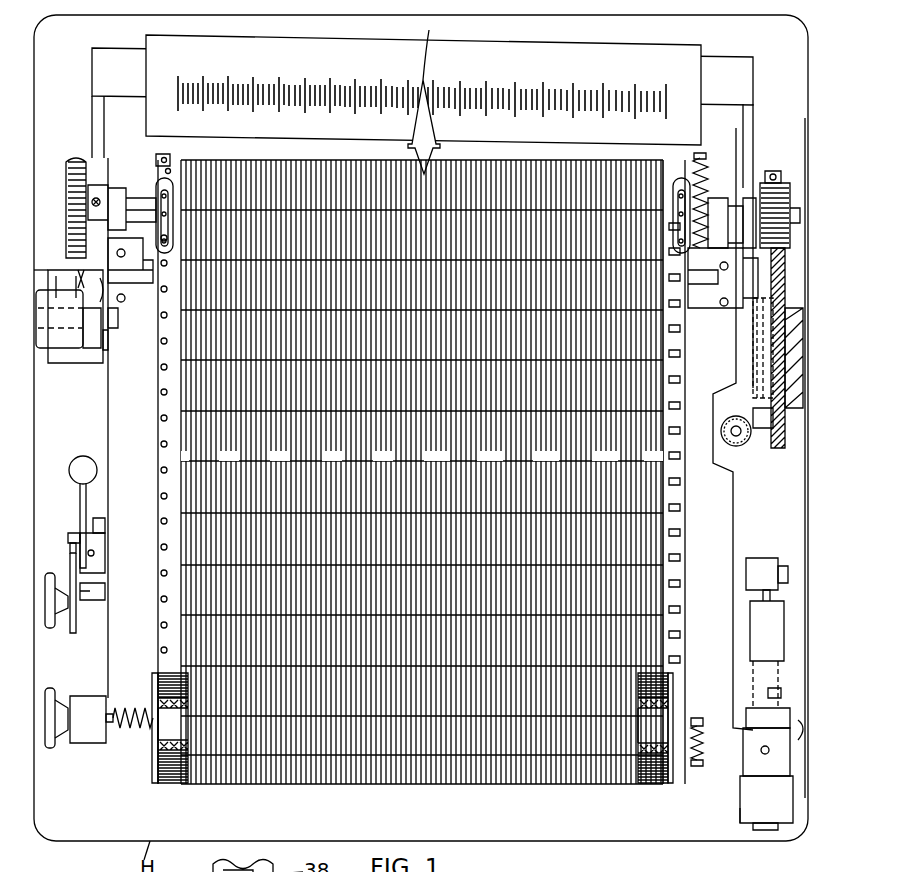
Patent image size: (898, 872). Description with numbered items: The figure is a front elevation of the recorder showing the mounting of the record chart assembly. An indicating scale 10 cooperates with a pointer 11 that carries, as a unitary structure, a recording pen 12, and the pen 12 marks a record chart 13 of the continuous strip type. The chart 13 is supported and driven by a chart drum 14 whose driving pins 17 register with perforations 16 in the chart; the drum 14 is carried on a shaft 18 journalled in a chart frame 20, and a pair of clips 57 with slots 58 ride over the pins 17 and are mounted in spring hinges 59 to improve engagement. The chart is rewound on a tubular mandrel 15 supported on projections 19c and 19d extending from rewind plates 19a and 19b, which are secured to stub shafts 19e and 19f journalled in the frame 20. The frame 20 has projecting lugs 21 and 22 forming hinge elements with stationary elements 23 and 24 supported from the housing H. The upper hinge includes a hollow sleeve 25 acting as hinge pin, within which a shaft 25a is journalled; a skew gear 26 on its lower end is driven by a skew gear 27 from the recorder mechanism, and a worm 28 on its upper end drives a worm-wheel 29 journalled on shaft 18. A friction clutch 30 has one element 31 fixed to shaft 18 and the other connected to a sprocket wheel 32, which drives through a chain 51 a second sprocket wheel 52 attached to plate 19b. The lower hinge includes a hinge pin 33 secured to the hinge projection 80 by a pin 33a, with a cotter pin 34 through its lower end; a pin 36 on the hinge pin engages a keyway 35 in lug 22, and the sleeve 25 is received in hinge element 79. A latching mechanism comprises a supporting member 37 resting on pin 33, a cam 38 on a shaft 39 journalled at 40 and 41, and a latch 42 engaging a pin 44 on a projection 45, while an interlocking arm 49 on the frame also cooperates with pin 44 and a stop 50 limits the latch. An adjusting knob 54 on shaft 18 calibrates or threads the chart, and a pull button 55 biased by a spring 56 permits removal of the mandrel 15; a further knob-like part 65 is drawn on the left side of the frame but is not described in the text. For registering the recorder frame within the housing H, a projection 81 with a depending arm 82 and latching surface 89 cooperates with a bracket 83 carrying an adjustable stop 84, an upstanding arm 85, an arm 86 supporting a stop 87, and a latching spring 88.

The indicating scale 10 is at (694, 46).
The indicating pointer 11 is at (426, 91).
The recording pen 12 is at (405, 142).
The record chart 13 is at (395, 779).
The chart drum 14 is at (150, 159).
The tubular mandrel 15 is at (170, 744).
The perforations 16 is at (153, 424).
The driving pins 17 is at (157, 160).
The shaft 18 is at (122, 190).
The rewind plate 19a is at (146, 772).
The rewind plate 19b is at (662, 780).
The projection 19c is at (179, 724).
The projection 19d is at (657, 725).
The stub shaft 19e is at (108, 722).
The stub shaft 19f is at (697, 735).
The chart frame 20 is at (100, 408).
The projecting lug 21 is at (777, 262).
The projecting lug 22 is at (745, 666).
The stationary hinge element 23 is at (790, 404).
The stationary hinge element 24 is at (740, 810).
The hollow sleeve 25 is at (750, 322).
The shaft 25a is at (760, 342).
The skew gear 26 is at (746, 436).
The skew gear 27 is at (731, 440).
The worm 28 is at (778, 182).
The worm-wheel 29 is at (768, 162).
The friction clutch 30 is at (740, 192).
The clutch element 31 is at (722, 200).
The sprocket wheel 32 is at (700, 185).
The hinge pin 33 is at (740, 710).
The pin 33a is at (766, 799).
The cotter pin 34 is at (762, 822).
The keyway 35 is at (771, 680).
The pin 36 is at (760, 685).
The supporting member 37 is at (742, 611).
The cam 38 is at (774, 556).
The shaft 39 is at (61, 542).
The journal 40 is at (750, 552).
The journal 41 is at (97, 536).
The latch 42 is at (68, 471).
The pin 44 is at (61, 529).
The projection 45 is at (97, 514).
The interlocking arm 49 is at (66, 626).
The stop 50 is at (90, 585).
The chain 51 is at (694, 148).
The second sprocket wheel 52 is at (690, 753).
The adjusting knob 54 is at (62, 166).
The pull button 55 is at (42, 742).
The spring 56 is at (135, 722).
The clips 57 is at (160, 172).
The slots 58 is at (158, 196).
The spring hinges 59 is at (116, 296).
The knob 65 is at (42, 622).
The hinge element 79 is at (745, 378).
The hinge projection 80 is at (750, 766).
The projection 81 is at (92, 282).
The depending arm 82 is at (58, 343).
The bracket 83 is at (37, 343).
The adjustable stop 84 is at (80, 342).
The upstanding arm 85 is at (29, 262).
The arm 86 is at (106, 322).
The stop 87 is at (100, 332).
The latching spring 88 is at (50, 264).
The latching surface 89 is at (72, 278).
The housing H is at (793, 719).